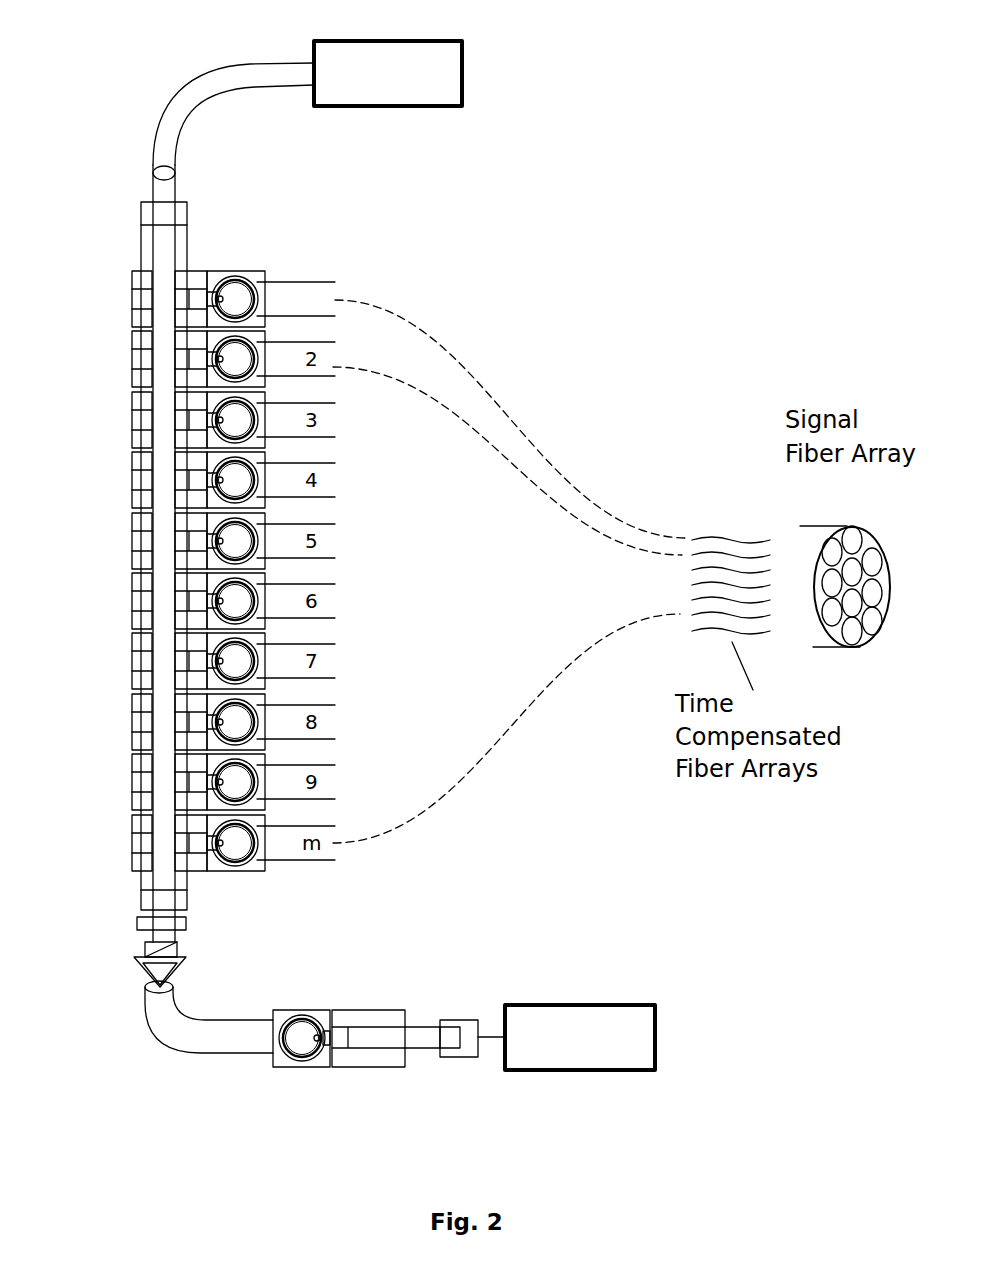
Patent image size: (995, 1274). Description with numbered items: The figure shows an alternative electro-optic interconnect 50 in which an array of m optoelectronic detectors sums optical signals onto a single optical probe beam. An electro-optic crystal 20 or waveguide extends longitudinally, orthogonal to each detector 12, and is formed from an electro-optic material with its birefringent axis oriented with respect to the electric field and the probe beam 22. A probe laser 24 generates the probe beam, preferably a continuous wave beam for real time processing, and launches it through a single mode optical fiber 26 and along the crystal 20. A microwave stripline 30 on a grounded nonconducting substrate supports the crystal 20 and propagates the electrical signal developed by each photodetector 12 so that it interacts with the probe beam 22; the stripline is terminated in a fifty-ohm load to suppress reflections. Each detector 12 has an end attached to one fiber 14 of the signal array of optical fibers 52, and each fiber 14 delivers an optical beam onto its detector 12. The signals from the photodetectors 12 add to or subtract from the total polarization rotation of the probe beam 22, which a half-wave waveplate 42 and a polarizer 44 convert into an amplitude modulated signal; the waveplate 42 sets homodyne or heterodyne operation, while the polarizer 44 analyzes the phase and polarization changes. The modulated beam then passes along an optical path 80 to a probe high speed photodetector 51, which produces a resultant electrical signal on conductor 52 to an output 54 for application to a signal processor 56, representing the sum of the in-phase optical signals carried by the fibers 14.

The photodetector 12 is at (250, 275).
The optical fiber 14 is at (518, 495).
The electro-optic crystal 20 is at (140, 248).
The probe beam 22 is at (177, 187).
The probe laser 24 is at (422, 95).
The single mode optical fiber 26 is at (248, 65).
The microwave stripline 30 is at (188, 288).
The half-wave waveplate 42 is at (137, 918).
The polarizer 44 is at (143, 952).
The sensor system 50 is at (78, 371).
The probe high speed photodetector 51 is at (323, 1012).
The array of optical fibers 52 is at (860, 523).
The output 54 is at (472, 1018).
The signal processor 56 is at (623, 1003).
The return fiber 80 is at (202, 1050).